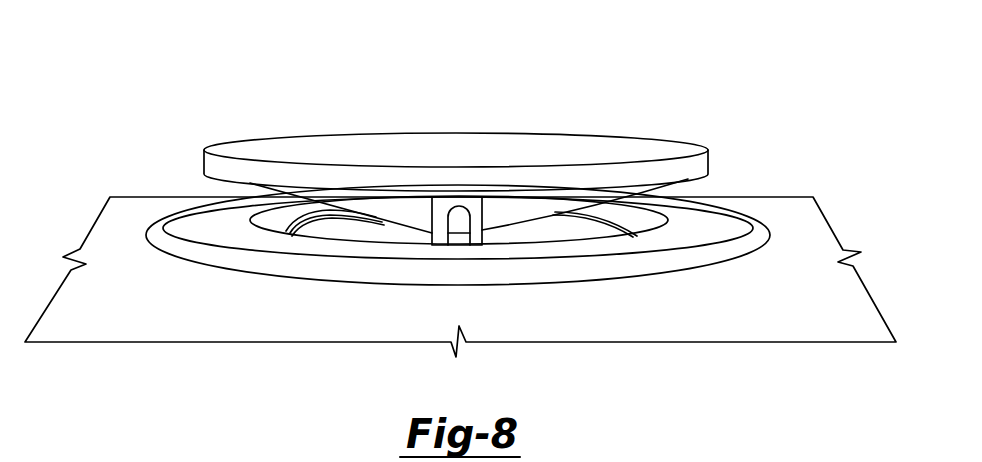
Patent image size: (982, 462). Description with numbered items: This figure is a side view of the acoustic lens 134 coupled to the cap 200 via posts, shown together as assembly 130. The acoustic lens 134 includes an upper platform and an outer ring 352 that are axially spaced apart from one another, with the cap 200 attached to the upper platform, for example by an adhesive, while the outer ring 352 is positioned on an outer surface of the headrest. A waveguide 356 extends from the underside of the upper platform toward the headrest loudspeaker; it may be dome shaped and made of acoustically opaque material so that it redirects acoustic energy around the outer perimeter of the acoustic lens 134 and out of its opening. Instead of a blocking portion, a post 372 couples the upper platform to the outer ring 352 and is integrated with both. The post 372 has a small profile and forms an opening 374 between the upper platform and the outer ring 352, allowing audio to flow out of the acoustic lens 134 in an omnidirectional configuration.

The disc assembly 130 is at (618, 80).
The acoustic lens 134 is at (703, 161).
The cap 200 is at (504, 124).
The outer ring 352 is at (682, 259).
The waveguide 356 is at (392, 212).
The post 372 is at (498, 218).
The opening 374 is at (458, 217).